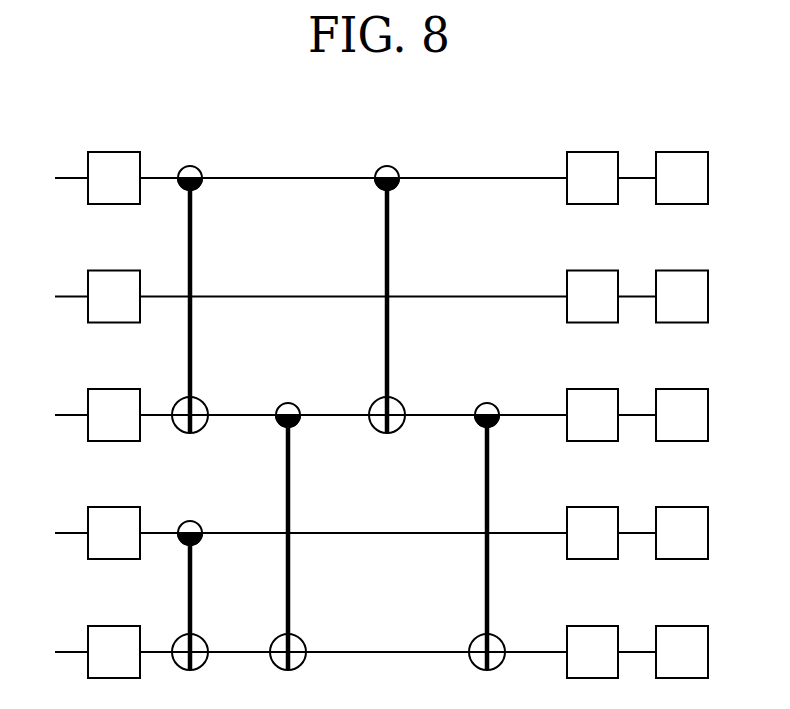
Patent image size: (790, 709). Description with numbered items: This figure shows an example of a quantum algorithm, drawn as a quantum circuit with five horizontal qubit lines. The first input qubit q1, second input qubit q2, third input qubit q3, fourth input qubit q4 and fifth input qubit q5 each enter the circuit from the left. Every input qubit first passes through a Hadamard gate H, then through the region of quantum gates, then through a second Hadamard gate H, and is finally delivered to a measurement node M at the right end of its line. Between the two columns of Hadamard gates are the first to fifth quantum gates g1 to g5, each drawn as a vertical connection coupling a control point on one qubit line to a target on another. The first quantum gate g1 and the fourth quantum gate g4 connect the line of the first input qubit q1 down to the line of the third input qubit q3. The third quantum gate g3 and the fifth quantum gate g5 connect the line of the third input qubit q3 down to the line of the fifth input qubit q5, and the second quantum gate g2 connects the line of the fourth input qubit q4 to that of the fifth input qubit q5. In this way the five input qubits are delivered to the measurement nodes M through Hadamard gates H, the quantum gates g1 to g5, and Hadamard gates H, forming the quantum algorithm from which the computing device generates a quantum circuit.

The first input qubit q1 is at (339, 179).
The second input qubit q2 is at (339, 297).
The third input qubit q3 is at (339, 416).
The fourth input qubit q4 is at (339, 534).
The fifth input qubit q5 is at (339, 653).
The first quantum gate g1 is at (181, 299).
The second quantum gate g2 is at (182, 595).
The third quantum gate g3 is at (280, 536).
The fourth quantum gate g4 is at (379, 299).
The fifth quantum gate g5 is at (478, 536).
The Hadamard gate H is at (353, 415).
The measurement node M is at (682, 415).